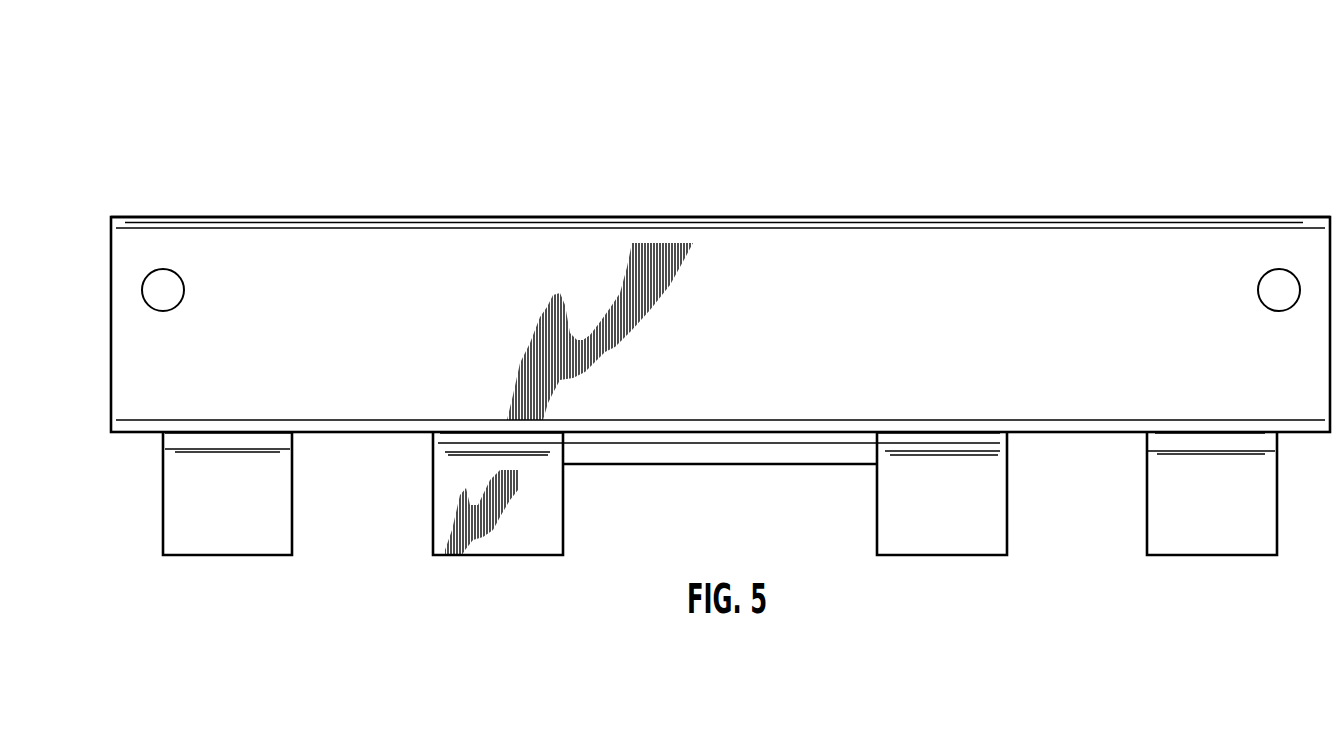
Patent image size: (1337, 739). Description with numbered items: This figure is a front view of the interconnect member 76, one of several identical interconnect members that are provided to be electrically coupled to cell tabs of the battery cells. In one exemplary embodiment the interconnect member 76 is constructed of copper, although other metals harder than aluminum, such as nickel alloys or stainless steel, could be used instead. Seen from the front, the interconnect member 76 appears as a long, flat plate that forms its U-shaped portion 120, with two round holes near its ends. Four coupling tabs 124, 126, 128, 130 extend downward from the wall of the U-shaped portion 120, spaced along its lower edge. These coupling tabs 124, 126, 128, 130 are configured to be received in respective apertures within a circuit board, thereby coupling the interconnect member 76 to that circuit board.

The interconnect member 76 is at (1067, 138).
The U-shaped portion 120 is at (393, 224).
The coupling tab 124 is at (230, 542).
The coupling tab 126 is at (527, 543).
The coupling tab 128 is at (932, 543).
The coupling tab 130 is at (1215, 544).